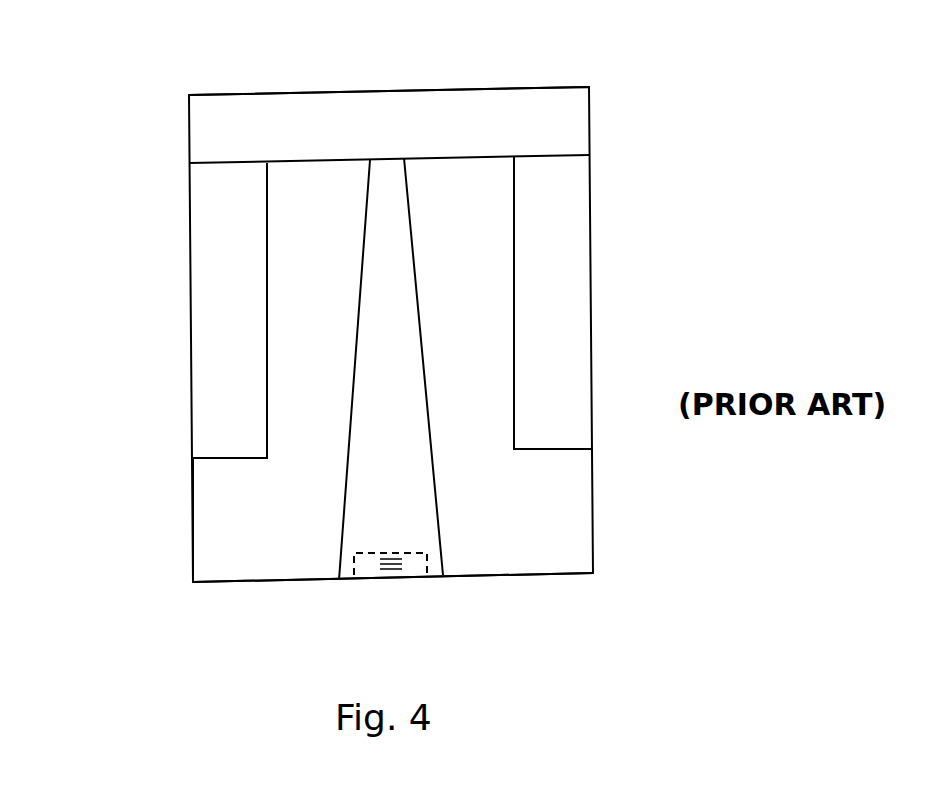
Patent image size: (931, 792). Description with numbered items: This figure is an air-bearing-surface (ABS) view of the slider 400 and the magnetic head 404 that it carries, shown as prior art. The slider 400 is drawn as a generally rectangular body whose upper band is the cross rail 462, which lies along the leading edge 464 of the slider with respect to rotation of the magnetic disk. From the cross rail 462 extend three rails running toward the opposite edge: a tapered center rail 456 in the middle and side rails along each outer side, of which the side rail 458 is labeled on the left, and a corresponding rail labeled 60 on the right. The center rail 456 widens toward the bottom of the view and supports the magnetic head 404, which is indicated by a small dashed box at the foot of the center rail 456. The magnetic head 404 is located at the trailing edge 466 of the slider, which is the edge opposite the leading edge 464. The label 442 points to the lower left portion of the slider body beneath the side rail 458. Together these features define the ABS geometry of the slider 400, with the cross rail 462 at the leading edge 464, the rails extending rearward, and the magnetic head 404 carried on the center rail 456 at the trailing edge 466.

The slider 400 is at (138, 92).
The cross rail 462 is at (312, 105).
The leading edge 464 is at (480, 92).
The side rail 458 is at (203, 233).
The right pole / shield 60 is at (577, 223).
The center rail 456 is at (375, 257).
The substrate / body 442 is at (190, 538).
The magnetic head 404 is at (370, 578).
The trailing edge 466 is at (503, 577).